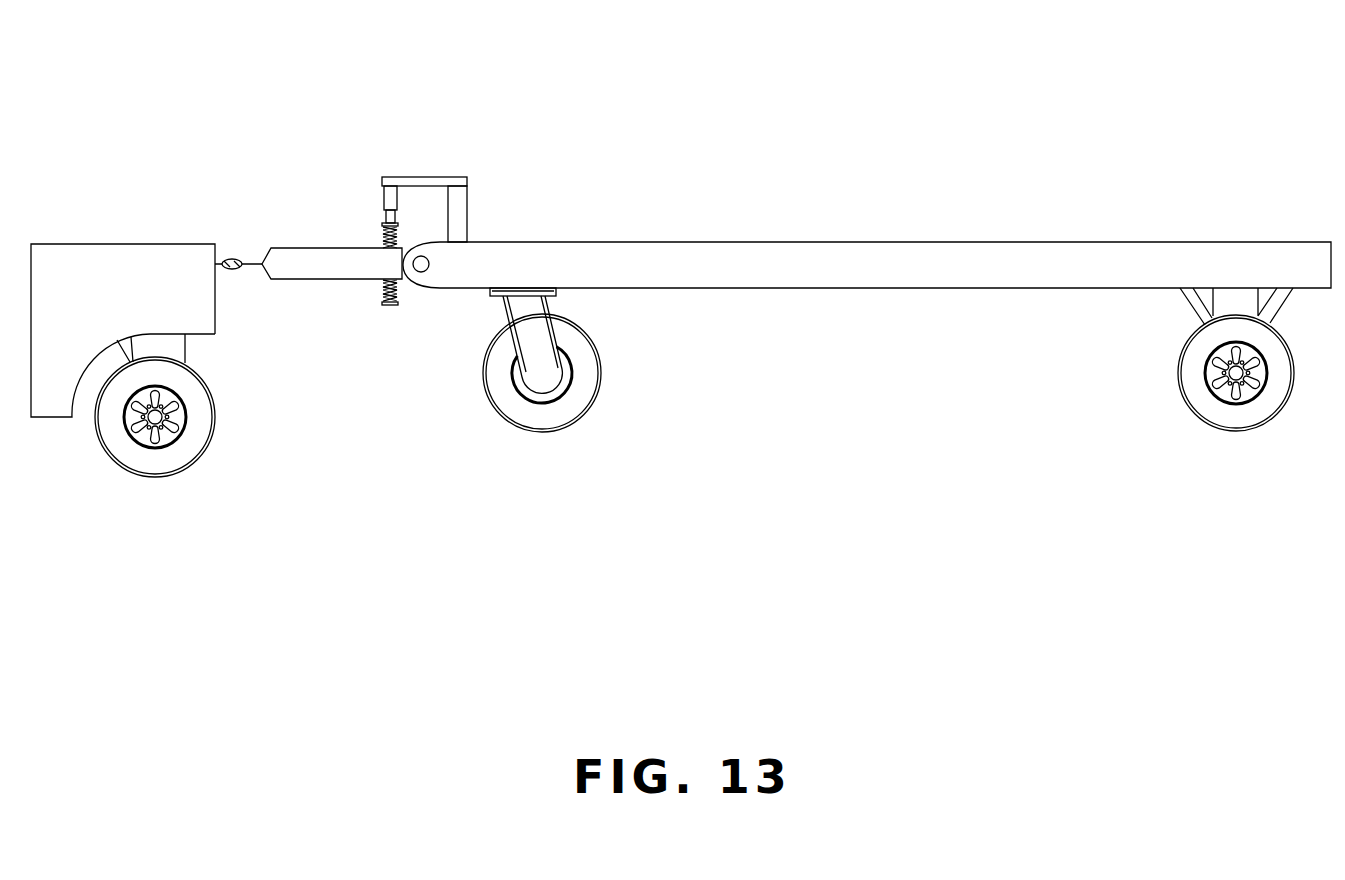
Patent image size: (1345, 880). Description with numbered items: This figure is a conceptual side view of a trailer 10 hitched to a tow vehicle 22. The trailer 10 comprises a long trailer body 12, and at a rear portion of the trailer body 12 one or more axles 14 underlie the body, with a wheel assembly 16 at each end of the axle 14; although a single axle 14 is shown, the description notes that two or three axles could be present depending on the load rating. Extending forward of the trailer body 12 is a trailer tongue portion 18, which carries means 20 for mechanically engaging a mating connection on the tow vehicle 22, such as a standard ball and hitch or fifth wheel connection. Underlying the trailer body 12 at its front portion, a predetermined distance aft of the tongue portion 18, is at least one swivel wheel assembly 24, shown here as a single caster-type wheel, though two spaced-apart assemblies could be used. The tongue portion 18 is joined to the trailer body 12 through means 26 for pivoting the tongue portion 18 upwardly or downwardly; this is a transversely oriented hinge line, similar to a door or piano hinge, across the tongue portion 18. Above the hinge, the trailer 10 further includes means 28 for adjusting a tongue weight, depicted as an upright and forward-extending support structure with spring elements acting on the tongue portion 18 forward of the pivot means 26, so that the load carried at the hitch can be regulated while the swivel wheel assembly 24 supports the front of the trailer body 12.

The trailer 10 is at (558, 100).
The trailer body 12 is at (823, 242).
The axle 14 is at (1236, 373).
The wheel assembly 16 is at (1171, 385).
The trailer tongue portion 18 is at (307, 267).
The means for mechanically engaging a mating connection on a tow vehicle 20 is at (247, 246).
The tow vehicle 22 is at (130, 298).
The swivel wheel assembly 24 is at (608, 343).
The means for pivoting the tongue portion 26 is at (425, 268).
The means for adjusting a tongue weight 28 is at (428, 162).